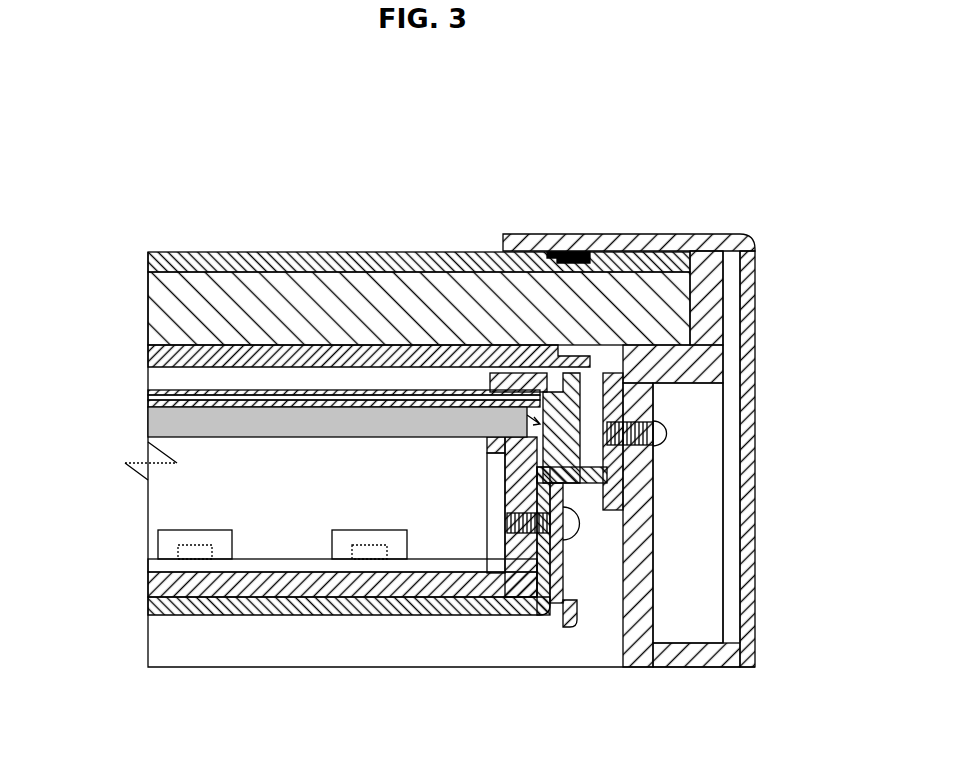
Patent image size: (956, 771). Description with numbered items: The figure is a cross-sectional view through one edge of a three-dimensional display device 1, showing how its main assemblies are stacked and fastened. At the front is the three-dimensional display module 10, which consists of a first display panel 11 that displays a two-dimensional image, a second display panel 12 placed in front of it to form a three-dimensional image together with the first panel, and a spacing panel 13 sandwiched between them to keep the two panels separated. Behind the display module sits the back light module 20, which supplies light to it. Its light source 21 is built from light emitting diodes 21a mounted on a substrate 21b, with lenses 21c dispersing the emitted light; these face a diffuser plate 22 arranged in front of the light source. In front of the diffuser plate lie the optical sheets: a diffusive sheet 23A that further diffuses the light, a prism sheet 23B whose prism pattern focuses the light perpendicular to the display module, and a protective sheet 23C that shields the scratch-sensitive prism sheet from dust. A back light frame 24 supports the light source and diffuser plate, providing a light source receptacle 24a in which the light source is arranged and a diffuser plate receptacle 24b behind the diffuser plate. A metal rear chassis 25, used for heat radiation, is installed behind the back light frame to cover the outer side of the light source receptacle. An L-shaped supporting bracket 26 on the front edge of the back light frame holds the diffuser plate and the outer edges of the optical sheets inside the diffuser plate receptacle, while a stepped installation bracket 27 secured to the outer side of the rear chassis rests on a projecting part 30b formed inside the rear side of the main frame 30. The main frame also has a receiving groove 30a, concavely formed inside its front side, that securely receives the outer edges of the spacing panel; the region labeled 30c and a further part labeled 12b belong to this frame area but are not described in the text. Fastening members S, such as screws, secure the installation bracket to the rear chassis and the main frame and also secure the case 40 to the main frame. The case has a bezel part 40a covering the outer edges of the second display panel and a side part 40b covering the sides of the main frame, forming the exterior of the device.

The 3D display device 1 is at (430, 127).
The 3D display module 10 is at (376, 268).
The first display panel 11 is at (148, 352).
The second display panel 12 is at (148, 256).
The panel supporting portion 12b is at (725, 360).
The spacing panel 13 is at (148, 300).
The back light module 20 is at (342, 580).
The light source 21 is at (296, 500).
The LED chip 21a is at (295, 477).
The substrate 21b is at (283, 565).
The lenses 21c is at (200, 530).
The diffuser plate 22 is at (148, 425).
The diffusive sheet 23A is at (148, 403).
The prism sheet 23B is at (148, 397).
The protective sheet 23C is at (148, 391).
The back light frame 24 is at (498, 578).
The light source receptacle 24a is at (163, 508).
The diffuser plate receptacle 24b is at (640, 432).
The rear chassis 25 is at (202, 615).
The supporting bracket 26 is at (500, 373).
The installation bracket 27 is at (550, 618).
The main frame 30 is at (729, 496).
The receiving groove 30a is at (688, 294).
The projecting part 30b is at (640, 540).
The cavity 30c is at (688, 558).
The case 40 is at (671, 420).
The bezel part 40a is at (625, 234).
The side part 40b is at (752, 487).
The fastening members S is at (660, 440).